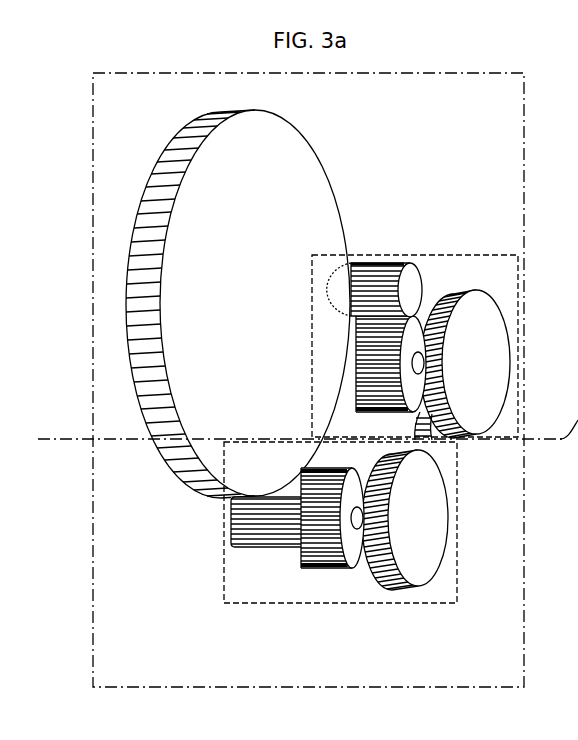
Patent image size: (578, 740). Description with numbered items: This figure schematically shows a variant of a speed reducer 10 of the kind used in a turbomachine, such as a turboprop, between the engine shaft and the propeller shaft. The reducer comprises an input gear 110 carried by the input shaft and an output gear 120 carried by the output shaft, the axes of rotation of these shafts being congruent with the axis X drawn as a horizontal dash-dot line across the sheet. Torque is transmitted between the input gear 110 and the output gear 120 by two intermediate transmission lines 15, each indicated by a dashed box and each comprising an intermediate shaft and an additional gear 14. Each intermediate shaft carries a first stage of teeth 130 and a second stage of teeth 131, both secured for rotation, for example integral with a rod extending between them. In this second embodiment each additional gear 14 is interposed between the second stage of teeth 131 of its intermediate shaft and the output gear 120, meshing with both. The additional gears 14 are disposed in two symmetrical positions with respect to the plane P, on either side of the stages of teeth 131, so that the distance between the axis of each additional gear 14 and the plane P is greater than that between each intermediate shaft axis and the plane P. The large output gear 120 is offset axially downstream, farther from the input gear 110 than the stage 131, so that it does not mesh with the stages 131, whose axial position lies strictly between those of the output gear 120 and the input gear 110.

The speed reducer 10 is at (452, 171).
The additional gear 14 is at (430, 280).
The intermediate transmission line 15 is at (352, 432).
The input gear 110 is at (454, 455).
The output gear 120 is at (340, 188).
The first stage of teeth 130 is at (364, 573).
The second stage of teeth 131 is at (300, 563).
The plane P is at (488, 73).
The axis X is at (50, 438).